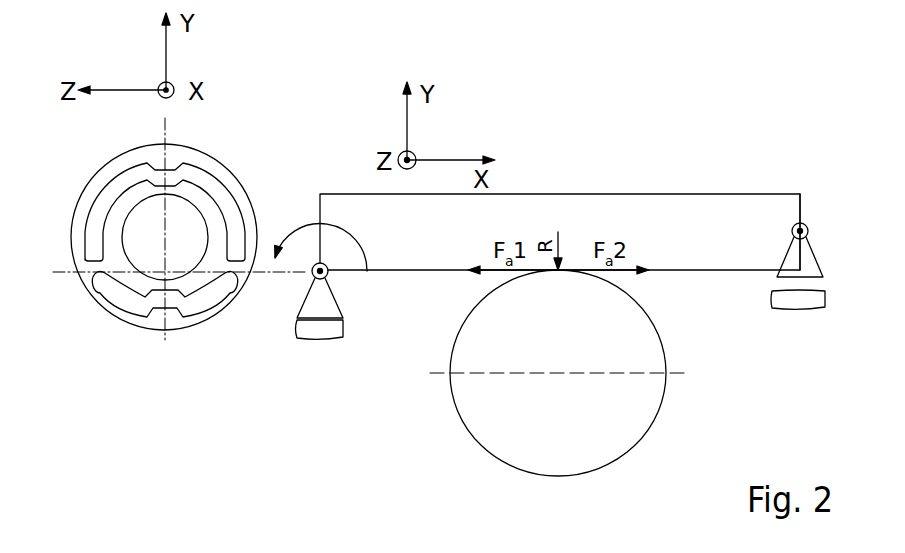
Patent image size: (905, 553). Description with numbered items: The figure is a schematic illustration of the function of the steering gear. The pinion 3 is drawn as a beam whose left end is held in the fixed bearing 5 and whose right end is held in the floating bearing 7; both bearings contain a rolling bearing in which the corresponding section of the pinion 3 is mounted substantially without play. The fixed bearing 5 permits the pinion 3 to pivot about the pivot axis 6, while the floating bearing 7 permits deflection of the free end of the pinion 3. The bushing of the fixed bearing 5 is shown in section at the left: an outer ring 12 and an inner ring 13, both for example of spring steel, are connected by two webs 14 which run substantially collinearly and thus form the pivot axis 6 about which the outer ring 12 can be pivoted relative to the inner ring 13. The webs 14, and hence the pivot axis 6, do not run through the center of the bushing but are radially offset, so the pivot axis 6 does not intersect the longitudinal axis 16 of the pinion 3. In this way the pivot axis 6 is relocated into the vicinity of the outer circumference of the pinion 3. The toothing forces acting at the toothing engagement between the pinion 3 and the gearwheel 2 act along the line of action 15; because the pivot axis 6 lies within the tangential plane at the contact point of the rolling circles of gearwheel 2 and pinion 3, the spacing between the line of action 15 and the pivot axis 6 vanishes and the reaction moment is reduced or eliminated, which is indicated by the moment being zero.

The gearwheel 2 is at (642, 357).
The pinion 3 is at (592, 208).
The fixed bearing 5 is at (325, 298).
The pivot axis 6 is at (328, 273).
The floating bearing 7 is at (766, 285).
The outer ring 12 is at (120, 167).
The inner ring 13 is at (130, 203).
The webs 14 is at (100, 268).
The line of action of the toothing forces 15 is at (63, 273).
The longitudinal axis 16 is at (715, 233).